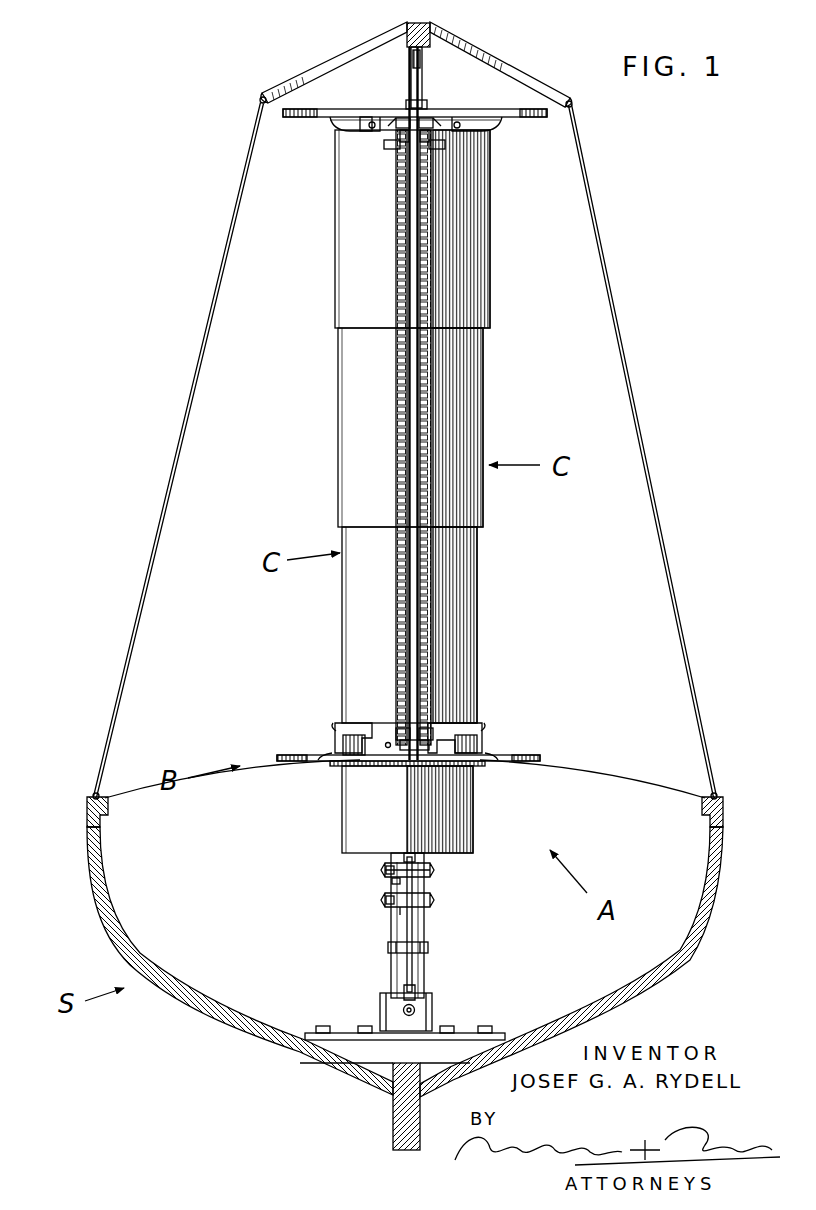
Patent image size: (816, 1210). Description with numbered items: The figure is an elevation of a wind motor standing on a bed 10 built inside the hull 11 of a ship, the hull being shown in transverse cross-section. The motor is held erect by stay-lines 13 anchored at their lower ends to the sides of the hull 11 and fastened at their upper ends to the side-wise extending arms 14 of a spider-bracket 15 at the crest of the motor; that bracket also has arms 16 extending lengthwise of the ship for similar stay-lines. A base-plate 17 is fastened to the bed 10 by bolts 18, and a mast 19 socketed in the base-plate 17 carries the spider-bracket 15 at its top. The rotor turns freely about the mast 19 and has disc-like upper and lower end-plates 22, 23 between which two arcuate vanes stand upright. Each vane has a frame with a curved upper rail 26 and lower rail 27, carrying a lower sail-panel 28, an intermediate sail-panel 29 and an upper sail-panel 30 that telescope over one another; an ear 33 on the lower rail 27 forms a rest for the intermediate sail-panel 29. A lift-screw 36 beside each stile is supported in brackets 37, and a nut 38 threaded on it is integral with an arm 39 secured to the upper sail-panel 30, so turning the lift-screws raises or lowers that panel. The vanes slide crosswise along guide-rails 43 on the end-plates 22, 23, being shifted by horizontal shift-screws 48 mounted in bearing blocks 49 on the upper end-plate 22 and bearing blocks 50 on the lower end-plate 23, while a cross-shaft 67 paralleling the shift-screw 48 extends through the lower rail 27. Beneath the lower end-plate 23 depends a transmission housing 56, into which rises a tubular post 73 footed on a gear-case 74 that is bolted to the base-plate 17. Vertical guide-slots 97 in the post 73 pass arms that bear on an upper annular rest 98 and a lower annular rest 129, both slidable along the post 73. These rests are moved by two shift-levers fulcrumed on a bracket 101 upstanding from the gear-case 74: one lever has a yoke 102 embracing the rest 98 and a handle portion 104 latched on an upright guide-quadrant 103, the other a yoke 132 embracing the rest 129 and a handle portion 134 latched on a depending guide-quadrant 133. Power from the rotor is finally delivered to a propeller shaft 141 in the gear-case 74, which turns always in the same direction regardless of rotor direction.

The bed 10 is at (345, 1050).
The hull 11 is at (183, 1020).
The stay-lines 13 is at (174, 523).
The side-wise extending arms 14 is at (332, 66).
The spider-bracket 15 is at (406, 36).
The arms 16 is at (413, 62).
The base-plate 17 is at (500, 1036).
The bolts 18 is at (322, 1026).
The mast 19 is at (423, 78).
The upper end-plate 22 is at (312, 110).
The lower end-plate 23 is at (293, 763).
The upper rail 26 is at (472, 114).
The lower rail 27 is at (478, 741).
The lower sail-panel 28 is at (470, 606).
The intermediate sail-panel 29 is at (483, 426).
The upper sail-panel 30 is at (352, 268).
The ear 33 is at (338, 725).
The lift-screw 36 is at (431, 386).
The brackets 37 is at (404, 118).
The nut 38 is at (402, 143).
The arm 39 is at (393, 149).
The guide-rails 43 is at (340, 124).
The shift-screws 48 is at (366, 133).
The bearing blocks 49 is at (370, 127).
The bearing blocks 50 is at (366, 767).
The transmission housing 56 is at (460, 811).
The cross-shaft 67 is at (388, 749).
The tubular post 73 is at (396, 964).
The gear-case 74 is at (432, 1009).
The vertical guide-slots 97 is at (410, 852).
The annular rest 98 is at (423, 878).
The bracket 101 is at (414, 976).
The yoke 102 is at (386, 870).
The guide-quadrant 103 is at (392, 881).
The handle portion 104 is at (429, 868).
The annular rest 129 is at (424, 910).
The yoke 132 is at (431, 900).
The guide-quadrant 133 is at (404, 916).
The handle portion 134 is at (388, 904).
The propeller shaft 141 is at (403, 1011).